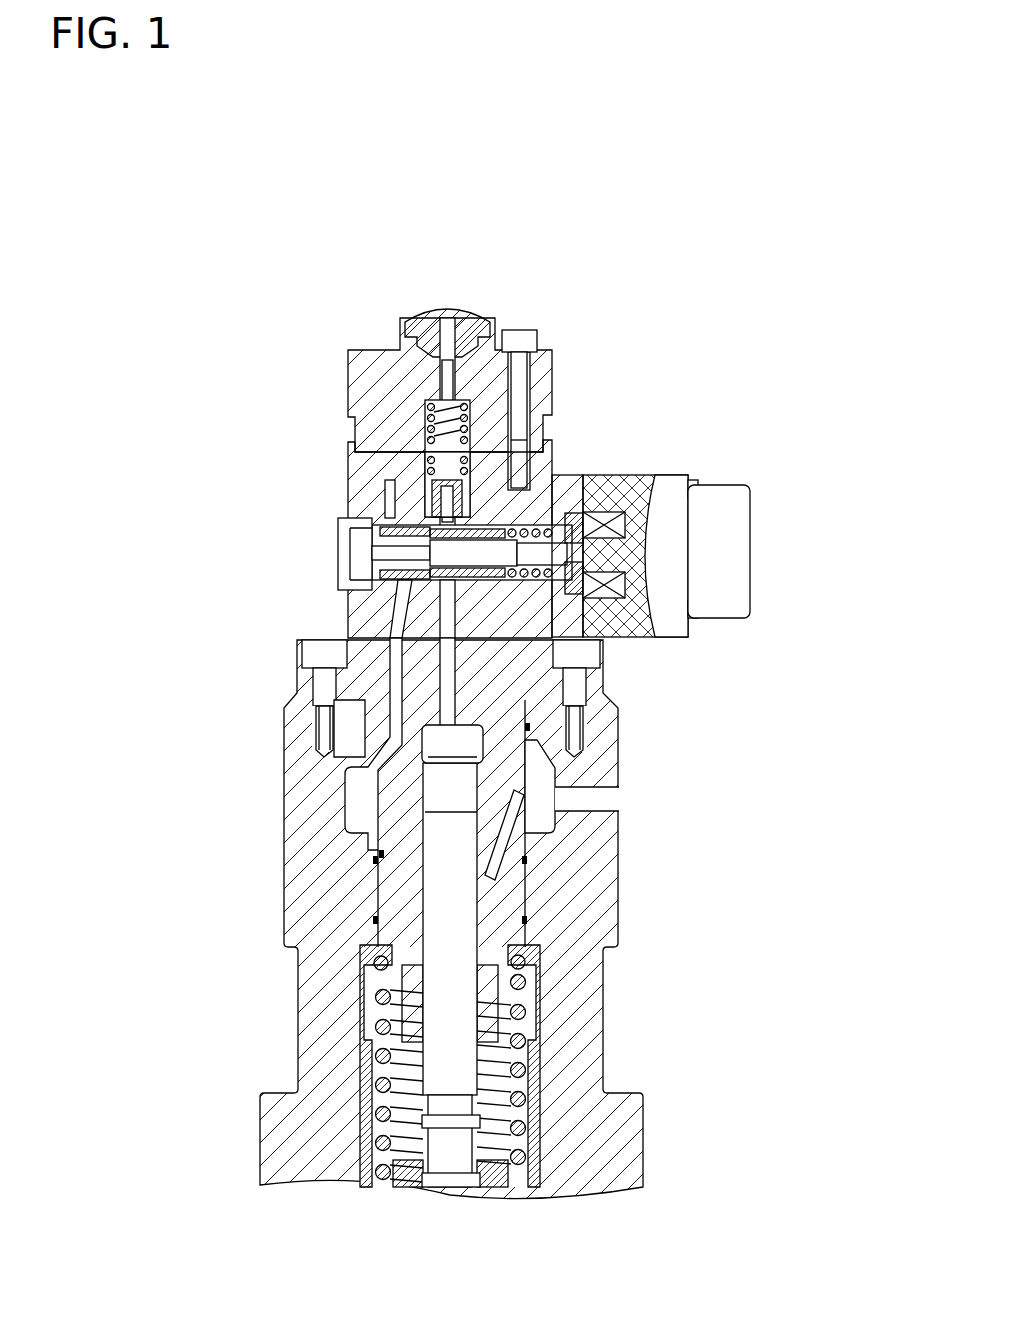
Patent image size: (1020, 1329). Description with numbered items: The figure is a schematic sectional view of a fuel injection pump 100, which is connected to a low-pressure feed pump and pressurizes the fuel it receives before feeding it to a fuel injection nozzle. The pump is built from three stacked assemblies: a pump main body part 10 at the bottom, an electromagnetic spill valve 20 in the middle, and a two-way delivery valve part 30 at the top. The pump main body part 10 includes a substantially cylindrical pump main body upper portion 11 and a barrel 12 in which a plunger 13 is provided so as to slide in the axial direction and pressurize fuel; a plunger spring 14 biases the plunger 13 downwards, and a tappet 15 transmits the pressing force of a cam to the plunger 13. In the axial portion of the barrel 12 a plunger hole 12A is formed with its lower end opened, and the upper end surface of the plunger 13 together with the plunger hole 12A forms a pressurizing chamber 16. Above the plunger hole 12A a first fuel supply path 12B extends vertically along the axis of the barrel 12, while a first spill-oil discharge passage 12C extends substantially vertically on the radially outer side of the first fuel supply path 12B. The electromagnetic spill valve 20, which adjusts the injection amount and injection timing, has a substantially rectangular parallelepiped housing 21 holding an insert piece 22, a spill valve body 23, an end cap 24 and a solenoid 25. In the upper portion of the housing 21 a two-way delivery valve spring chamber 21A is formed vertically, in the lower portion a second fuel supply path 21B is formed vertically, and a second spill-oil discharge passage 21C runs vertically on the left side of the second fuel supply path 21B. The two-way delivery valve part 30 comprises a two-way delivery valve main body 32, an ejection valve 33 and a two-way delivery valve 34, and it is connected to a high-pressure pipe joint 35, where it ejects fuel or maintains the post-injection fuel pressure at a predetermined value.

The fuel injection pump 100 is at (152, 190).
The pump main body part 10 is at (232, 927).
The pump main body upper portion 11 is at (290, 800).
The barrel 12 is at (315, 698).
The plunger hole 12A is at (440, 818).
The first fuel supply path 12B is at (450, 690).
The first spill-oil discharge passage 12C is at (395, 722).
The plunger 13 is at (455, 940).
The plunger spring 14 is at (527, 1040).
The tappet 15 is at (540, 1090).
The pressurizing chamber 16 is at (434, 754).
The electromagnetic spill valve 20 is at (232, 540).
The housing 21 is at (350, 465).
The two-way delivery valve spring chamber 21A is at (470, 515).
The second fuel supply path 21B is at (456, 627).
The second spill-oil discharge passage 21C is at (370, 626).
The insert piece 22 is at (372, 582).
The spill valve body 23 is at (355, 553).
The end cap 24 is at (372, 530).
The solenoid 25 is at (735, 522).
The two-way delivery valve part 30 is at (260, 377).
The two-way delivery valve main body 32 is at (553, 380).
The ejection valve 33 is at (482, 488).
The two-way delivery valve 34 is at (423, 425).
The high-pressure pipe joint 35 is at (460, 312).